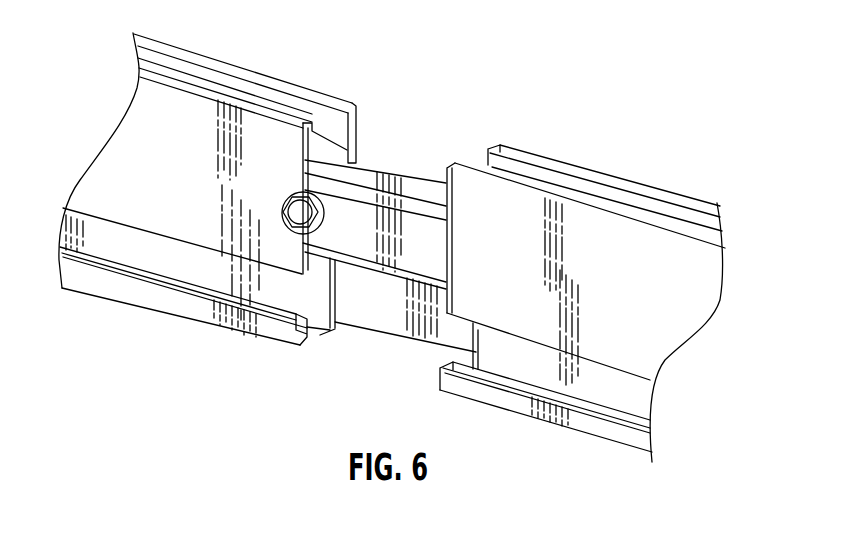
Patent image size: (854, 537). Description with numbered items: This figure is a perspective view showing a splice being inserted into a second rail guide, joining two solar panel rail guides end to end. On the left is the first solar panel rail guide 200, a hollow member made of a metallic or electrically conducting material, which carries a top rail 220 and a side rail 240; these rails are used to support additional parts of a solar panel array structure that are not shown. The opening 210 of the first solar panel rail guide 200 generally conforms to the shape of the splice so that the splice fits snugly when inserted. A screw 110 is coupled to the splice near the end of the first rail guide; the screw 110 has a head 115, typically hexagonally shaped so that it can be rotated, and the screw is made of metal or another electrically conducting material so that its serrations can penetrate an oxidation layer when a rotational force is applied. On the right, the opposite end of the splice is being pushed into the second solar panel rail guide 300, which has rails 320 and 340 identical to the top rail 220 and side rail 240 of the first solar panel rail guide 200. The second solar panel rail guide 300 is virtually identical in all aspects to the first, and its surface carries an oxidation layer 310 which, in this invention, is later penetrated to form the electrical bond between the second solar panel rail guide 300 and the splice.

The screw 110 is at (273, 205).
The head 115 is at (322, 220).
The solar panel rail guide 200 is at (107, 170).
The opening 210 is at (331, 291).
The top rail 220 is at (202, 83).
The side rail 240 is at (147, 258).
The second solar panel rail guide 300 is at (682, 306).
The oxidation layer 310 is at (458, 343).
The rail 320 is at (612, 205).
The rail 340 is at (627, 398).